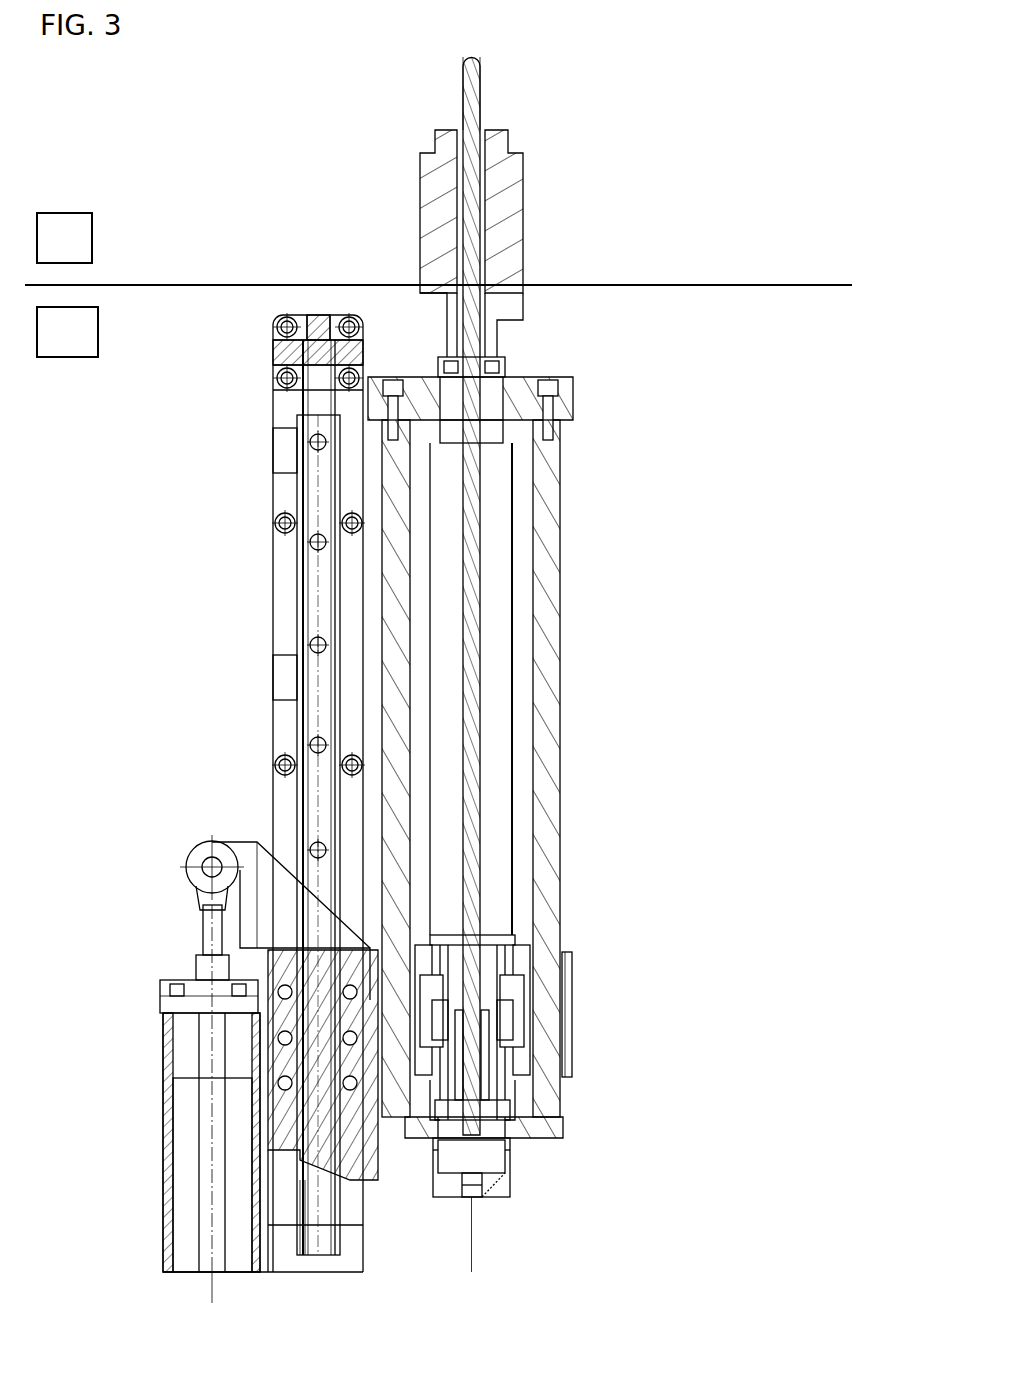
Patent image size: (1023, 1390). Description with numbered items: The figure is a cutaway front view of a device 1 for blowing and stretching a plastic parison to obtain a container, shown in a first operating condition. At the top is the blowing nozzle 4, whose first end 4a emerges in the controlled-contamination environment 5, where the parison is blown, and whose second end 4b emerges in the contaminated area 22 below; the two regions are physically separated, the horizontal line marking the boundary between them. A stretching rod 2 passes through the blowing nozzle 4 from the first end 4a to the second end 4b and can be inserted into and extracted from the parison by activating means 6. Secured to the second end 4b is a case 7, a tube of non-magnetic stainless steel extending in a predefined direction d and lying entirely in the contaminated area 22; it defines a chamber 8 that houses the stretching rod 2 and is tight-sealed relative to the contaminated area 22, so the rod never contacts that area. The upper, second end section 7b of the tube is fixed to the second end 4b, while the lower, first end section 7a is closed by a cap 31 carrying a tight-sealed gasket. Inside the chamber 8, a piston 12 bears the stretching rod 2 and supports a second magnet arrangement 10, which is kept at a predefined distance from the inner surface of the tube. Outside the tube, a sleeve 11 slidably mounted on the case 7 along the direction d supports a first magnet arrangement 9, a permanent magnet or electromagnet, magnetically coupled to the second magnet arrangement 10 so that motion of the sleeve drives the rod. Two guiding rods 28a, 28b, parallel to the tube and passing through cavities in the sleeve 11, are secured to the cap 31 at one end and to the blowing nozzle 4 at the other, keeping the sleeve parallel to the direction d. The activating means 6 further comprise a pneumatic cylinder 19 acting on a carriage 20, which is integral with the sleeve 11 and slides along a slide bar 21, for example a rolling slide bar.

The device 1 is at (300, 226).
The stretching rod 2 is at (478, 659).
The blowing nozzle 4 is at (537, 210).
The first end 4a is at (488, 118).
The second end 4b is at (488, 430).
The controlled-contamination environment 5 is at (64, 238).
The activating means 6 is at (224, 815).
The case 7 is at (515, 739).
The first end section 7a is at (528, 1163).
The second end section 7b is at (515, 451).
The chamber 8 is at (496, 830).
The first magnet arrangement 9 is at (518, 994).
The second magnet arrangement 10 is at (506, 1017).
The sleeve 11 is at (572, 999).
The piston 12 is at (508, 940).
The pneumatic cylinder 19 is at (165, 1141).
The carriage 20 is at (313, 1093).
The slide bar 21 is at (268, 478).
The contaminated area 22 is at (67, 332).
The guiding rod 28a is at (388, 571).
The guiding rod 28b is at (551, 574).
The cap 31 is at (494, 1201).
The predefined direction d is at (473, 1220).